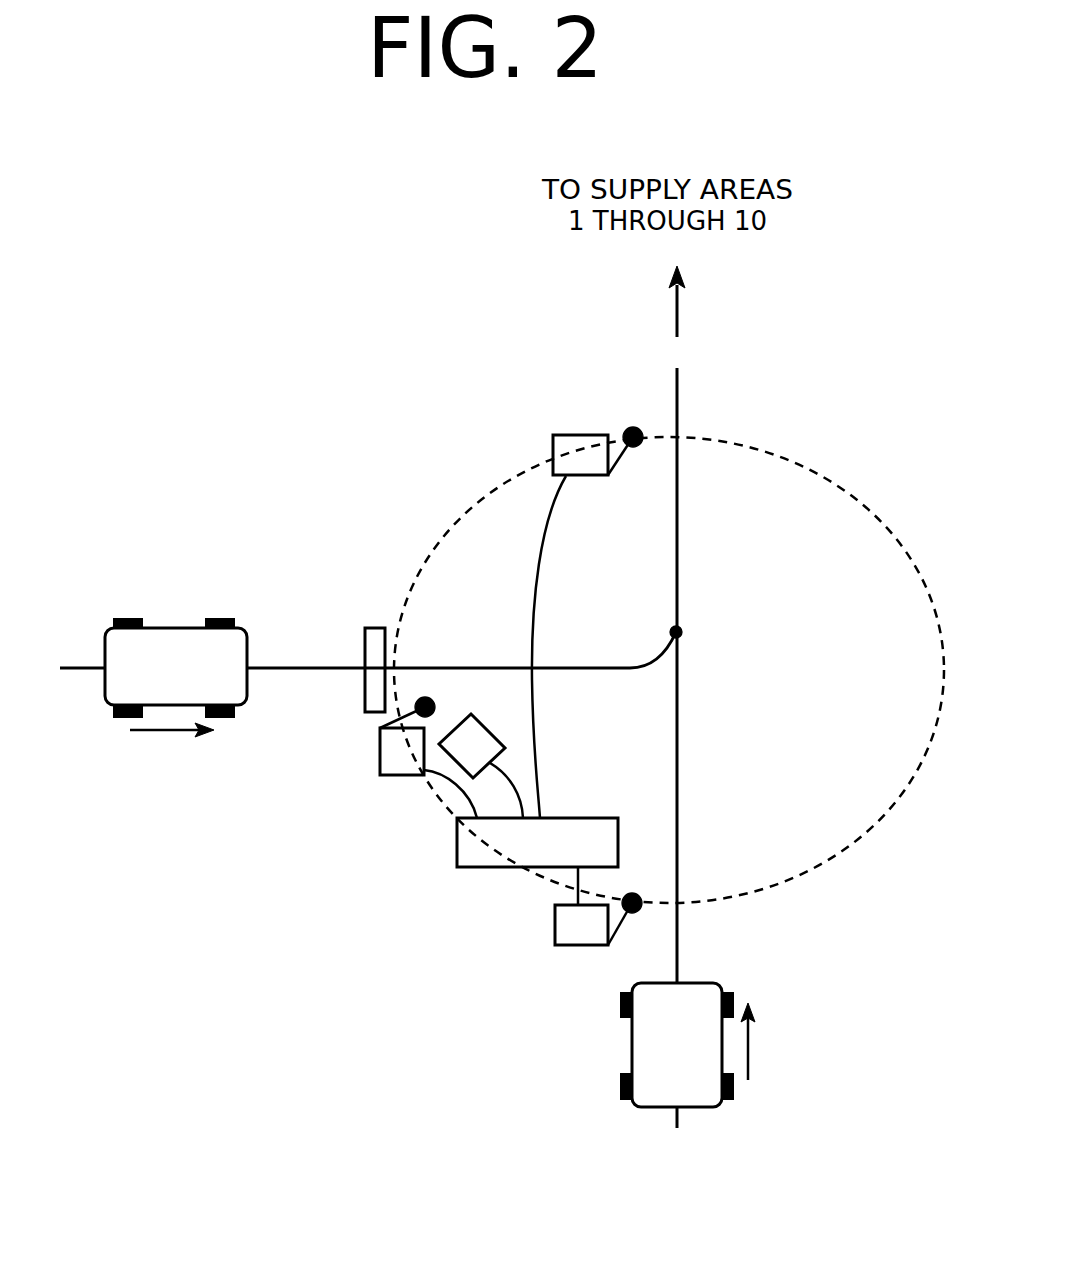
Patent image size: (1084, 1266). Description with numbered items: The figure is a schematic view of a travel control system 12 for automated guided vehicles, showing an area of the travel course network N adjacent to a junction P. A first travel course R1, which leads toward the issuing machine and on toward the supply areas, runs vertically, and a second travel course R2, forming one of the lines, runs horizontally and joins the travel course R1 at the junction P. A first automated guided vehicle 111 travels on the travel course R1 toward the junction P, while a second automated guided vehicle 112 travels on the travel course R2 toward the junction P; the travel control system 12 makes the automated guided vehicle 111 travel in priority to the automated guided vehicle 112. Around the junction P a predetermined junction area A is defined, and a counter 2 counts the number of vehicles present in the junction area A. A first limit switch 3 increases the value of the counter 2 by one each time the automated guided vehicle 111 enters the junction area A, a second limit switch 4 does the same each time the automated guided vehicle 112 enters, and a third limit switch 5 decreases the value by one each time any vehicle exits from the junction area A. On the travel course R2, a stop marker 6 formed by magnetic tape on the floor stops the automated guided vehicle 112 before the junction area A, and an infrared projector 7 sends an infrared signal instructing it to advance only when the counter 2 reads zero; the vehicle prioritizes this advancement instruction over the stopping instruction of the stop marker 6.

The counter 2 is at (488, 868).
The limit switch 3 is at (567, 945).
The limit switch 4 is at (378, 752).
The limit switch 5 is at (592, 435).
The stop marker 6 is at (375, 628).
The infrared projector 7 is at (428, 781).
The travel control system 12 is at (837, 331).
The automated guided vehicle 111 is at (628, 1052).
The automated guided vehicle 112 is at (175, 627).
The travel course R1 is at (680, 943).
The travel course R2 is at (308, 668).
The junction area A is at (831, 485).
The travel course network N is at (690, 569).
The junction P is at (680, 630).